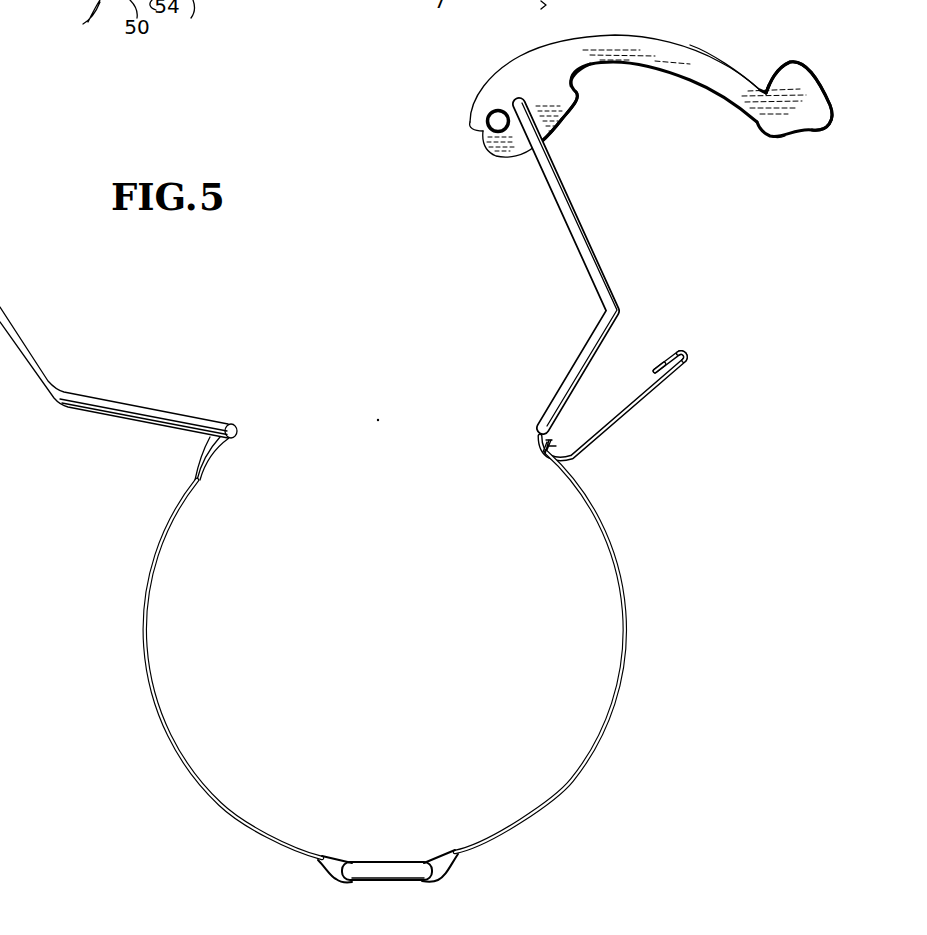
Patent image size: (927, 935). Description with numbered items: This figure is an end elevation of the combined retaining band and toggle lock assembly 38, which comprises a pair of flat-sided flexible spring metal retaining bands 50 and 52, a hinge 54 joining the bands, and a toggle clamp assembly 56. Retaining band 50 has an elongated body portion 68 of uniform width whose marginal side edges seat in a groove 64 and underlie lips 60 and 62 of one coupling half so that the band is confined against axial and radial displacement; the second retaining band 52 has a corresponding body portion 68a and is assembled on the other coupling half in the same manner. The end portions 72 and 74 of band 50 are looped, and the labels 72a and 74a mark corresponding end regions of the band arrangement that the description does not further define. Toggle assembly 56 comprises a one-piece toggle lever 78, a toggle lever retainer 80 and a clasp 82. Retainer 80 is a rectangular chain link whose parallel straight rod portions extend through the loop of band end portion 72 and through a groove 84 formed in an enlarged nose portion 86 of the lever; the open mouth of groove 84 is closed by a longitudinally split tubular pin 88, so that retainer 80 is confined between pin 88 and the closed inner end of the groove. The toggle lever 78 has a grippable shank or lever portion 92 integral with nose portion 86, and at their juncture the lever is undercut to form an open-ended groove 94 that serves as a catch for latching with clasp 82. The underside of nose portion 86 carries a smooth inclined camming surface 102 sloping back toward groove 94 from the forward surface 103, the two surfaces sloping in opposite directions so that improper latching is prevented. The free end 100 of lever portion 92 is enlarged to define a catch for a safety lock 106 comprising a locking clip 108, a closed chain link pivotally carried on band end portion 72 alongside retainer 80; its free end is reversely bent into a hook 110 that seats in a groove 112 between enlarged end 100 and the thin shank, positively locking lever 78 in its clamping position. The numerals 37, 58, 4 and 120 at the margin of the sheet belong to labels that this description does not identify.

The toggle lever 78 is at (641, 35).
The toggle clamp assembly 56 is at (762, 136).
The lever portion 92 is at (725, 64).
The groove 112 is at (767, 90).
The free end 100 is at (800, 67).
The groove 94 is at (573, 80).
The camming surface 102 is at (562, 121).
The tubular pin 88 is at (487, 115).
The nose portion 86 is at (488, 154).
The groove 84 is at (525, 154).
The forward surface 103 is at (497, 160).
The toggle lever retainer 80 is at (567, 212).
The retaining band and toggle lock assembly 38 is at (614, 247).
The safety lock 106 is at (677, 387).
The locking clip 108 is at (690, 357).
The hook 110 is at (658, 363).
The end portion 72 is at (548, 452).
The clasp 82 is at (38, 346).
The left junction 72a is at (227, 450).
The retaining band 50 is at (628, 582).
The retaining band 52 is at (145, 578).
The body portion 68a is at (150, 652).
The body portion 68 is at (626, 640).
The hinge 54 is at (393, 862).
The band end 74a is at (348, 860).
The end portion 74 is at (441, 855).
The fragment 37 is at (74, 9).
The groove 64 is at (116, 9).
The lip 62 is at (249, 9).
The lip 60 is at (64, 29).
The fragment 58 is at (182, 29).
The fragment 4 is at (377, 7).
The fragment 120 is at (525, 7).